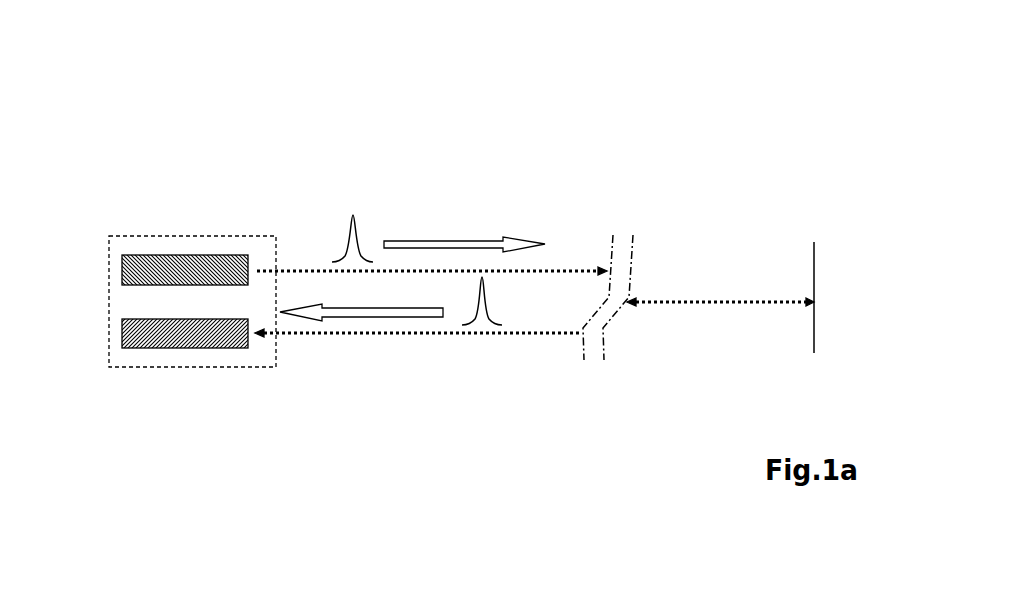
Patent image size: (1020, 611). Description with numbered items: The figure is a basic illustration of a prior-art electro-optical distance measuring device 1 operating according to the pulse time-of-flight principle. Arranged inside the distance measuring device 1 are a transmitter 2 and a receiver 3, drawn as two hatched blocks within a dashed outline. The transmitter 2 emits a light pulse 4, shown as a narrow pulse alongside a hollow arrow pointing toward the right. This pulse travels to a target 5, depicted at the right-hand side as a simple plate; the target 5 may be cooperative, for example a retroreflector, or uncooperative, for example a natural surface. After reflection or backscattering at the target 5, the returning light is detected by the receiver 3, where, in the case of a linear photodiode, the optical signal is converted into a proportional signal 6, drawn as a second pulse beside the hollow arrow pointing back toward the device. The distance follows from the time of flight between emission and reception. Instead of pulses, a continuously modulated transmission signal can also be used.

The electro-optical distance measuring device 1 is at (198, 235).
The transmitter 2 is at (162, 273).
The receiver 3 is at (155, 335).
The emitted light pulse 4 is at (358, 230).
The target 5 is at (814, 274).
The signal 6 is at (487, 290).